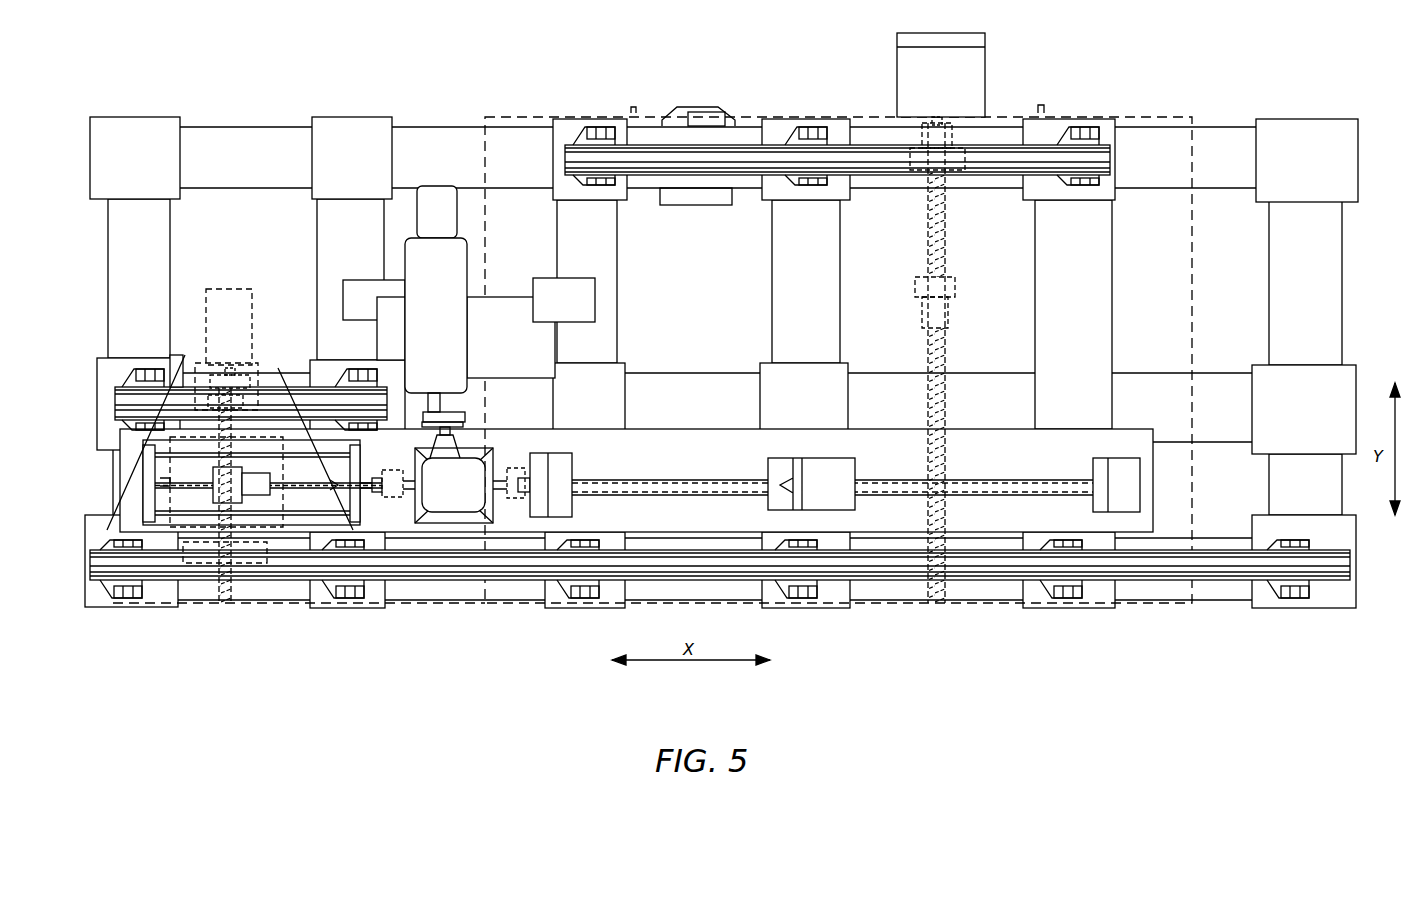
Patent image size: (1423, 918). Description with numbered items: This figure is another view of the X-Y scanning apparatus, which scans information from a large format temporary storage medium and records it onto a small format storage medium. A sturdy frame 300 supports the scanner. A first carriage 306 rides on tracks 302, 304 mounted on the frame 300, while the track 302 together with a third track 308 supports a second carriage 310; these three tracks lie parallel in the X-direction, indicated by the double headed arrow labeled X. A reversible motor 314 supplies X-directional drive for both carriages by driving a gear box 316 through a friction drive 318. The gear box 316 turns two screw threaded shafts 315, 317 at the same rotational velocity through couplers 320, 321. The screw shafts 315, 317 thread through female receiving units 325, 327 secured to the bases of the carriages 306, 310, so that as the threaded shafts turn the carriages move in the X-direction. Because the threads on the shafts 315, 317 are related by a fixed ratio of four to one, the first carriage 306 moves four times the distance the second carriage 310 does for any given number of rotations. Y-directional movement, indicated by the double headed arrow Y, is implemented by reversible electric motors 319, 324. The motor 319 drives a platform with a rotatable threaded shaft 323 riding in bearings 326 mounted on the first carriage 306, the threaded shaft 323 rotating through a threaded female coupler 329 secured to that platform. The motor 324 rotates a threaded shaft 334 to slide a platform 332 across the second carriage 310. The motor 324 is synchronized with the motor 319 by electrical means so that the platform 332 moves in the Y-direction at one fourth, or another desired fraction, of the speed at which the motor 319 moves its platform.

The frame 300 is at (1330, 299).
The track 302 is at (1345, 578).
The track 304 is at (735, 157).
The first carriage 306 is at (1185, 118).
The third track 308 is at (303, 400).
The second carriage 310 is at (271, 368).
The reversible motor 314 is at (449, 326).
The screw threaded shaft 315 is at (657, 483).
The gear box 316 is at (464, 495).
The screw threaded shaft 317 is at (272, 486).
The friction drive 318 is at (440, 412).
The reversible electric motor 319 is at (951, 89).
The coupler 320 is at (395, 471).
The coupler 321 is at (512, 467).
The threaded shaft 323 is at (946, 350).
The reversible electric motor 324 is at (227, 297).
The female receiving unit 325 is at (229, 503).
The bearings 326 is at (913, 163).
The female receiving unit 327 is at (842, 497).
The threaded female coupler 329 is at (918, 287).
The platform 332 is at (267, 540).
The threaded shaft 334 is at (223, 523).